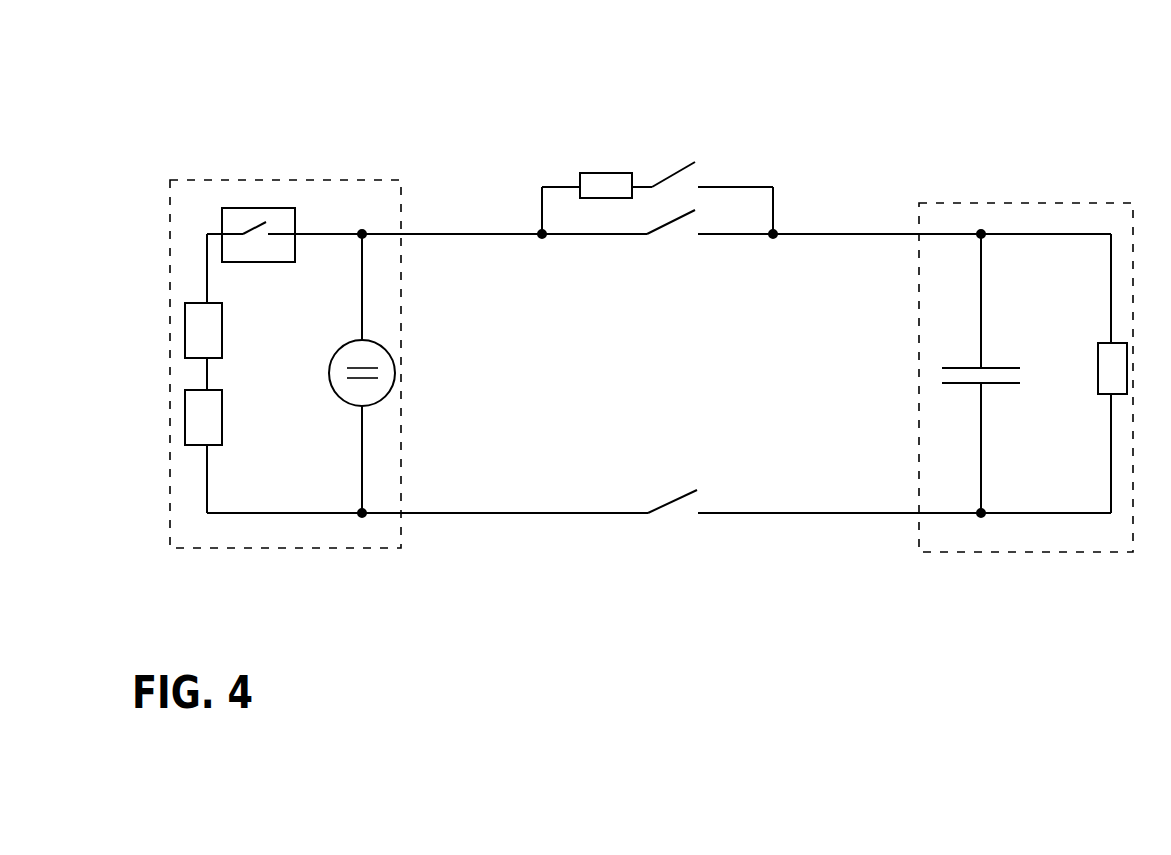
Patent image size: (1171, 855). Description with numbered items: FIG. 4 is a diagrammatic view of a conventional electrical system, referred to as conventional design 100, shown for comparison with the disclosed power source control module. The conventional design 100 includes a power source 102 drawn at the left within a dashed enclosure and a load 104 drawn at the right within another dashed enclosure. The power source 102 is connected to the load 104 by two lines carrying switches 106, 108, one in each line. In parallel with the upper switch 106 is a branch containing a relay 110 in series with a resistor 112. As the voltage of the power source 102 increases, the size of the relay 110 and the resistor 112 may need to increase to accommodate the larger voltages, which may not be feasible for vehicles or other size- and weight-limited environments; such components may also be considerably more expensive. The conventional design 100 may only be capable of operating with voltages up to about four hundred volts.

The conventional design 100 is at (392, 103).
The power source 102 is at (285, 180).
The load 104 is at (1044, 203).
The switch 106 is at (651, 253).
The switch 108 is at (660, 487).
The relay 110 is at (672, 146).
The resistor 112 is at (597, 173).